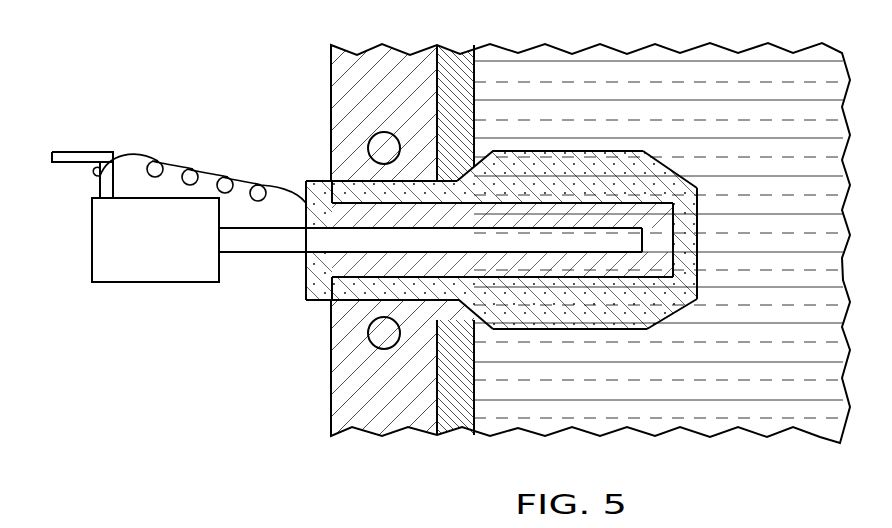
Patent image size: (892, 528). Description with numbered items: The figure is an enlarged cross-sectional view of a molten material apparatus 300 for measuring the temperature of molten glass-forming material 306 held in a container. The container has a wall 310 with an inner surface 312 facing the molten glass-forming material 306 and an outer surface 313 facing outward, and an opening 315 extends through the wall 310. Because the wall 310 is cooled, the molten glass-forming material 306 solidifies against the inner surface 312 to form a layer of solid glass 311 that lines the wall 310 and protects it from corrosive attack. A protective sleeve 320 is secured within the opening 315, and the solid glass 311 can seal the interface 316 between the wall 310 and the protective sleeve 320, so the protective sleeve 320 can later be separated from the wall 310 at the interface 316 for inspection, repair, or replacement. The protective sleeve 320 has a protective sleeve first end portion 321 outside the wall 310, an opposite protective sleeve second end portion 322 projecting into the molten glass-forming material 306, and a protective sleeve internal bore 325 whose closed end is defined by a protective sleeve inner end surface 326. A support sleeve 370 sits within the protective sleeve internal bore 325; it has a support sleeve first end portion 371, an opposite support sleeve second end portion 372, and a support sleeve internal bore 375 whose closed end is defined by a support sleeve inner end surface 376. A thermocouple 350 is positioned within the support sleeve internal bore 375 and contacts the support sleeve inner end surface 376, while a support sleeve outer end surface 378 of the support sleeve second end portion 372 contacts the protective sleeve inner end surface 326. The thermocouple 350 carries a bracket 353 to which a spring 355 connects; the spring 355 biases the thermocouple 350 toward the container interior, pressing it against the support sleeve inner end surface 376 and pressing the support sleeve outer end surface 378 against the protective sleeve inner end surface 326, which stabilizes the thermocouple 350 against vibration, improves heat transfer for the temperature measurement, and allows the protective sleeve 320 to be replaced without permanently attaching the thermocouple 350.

The molten material apparatus 300 is at (132, 63).
The molten glass-forming material 306 is at (777, 62).
The wall 310 is at (340, 60).
The layer of solid glass 311 is at (455, 58).
The inner surface 312 is at (452, 405).
The outer surface 313 is at (322, 135).
The opening 315 is at (360, 298).
The interface 316 is at (433, 181).
The protective sleeve 320 is at (613, 163).
The protective sleeve first end portion 321 is at (358, 188).
The protective sleeve second end portion 322 is at (694, 236).
The protective sleeve internal bore 325 is at (505, 205).
The protective sleeve inner end surface 326 is at (655, 237).
The thermocouple 350 is at (578, 242).
The bracket 353 is at (78, 152).
The spring 355 is at (210, 170).
The support sleeve 370 is at (512, 263).
The support sleeve first end portion 371 is at (313, 293).
The support sleeve second end portion 372 is at (645, 260).
The support sleeve internal bore 375 is at (382, 300).
The support sleeve inner end surface 376 is at (642, 237).
The support sleeve outer end surface 378 is at (690, 214).